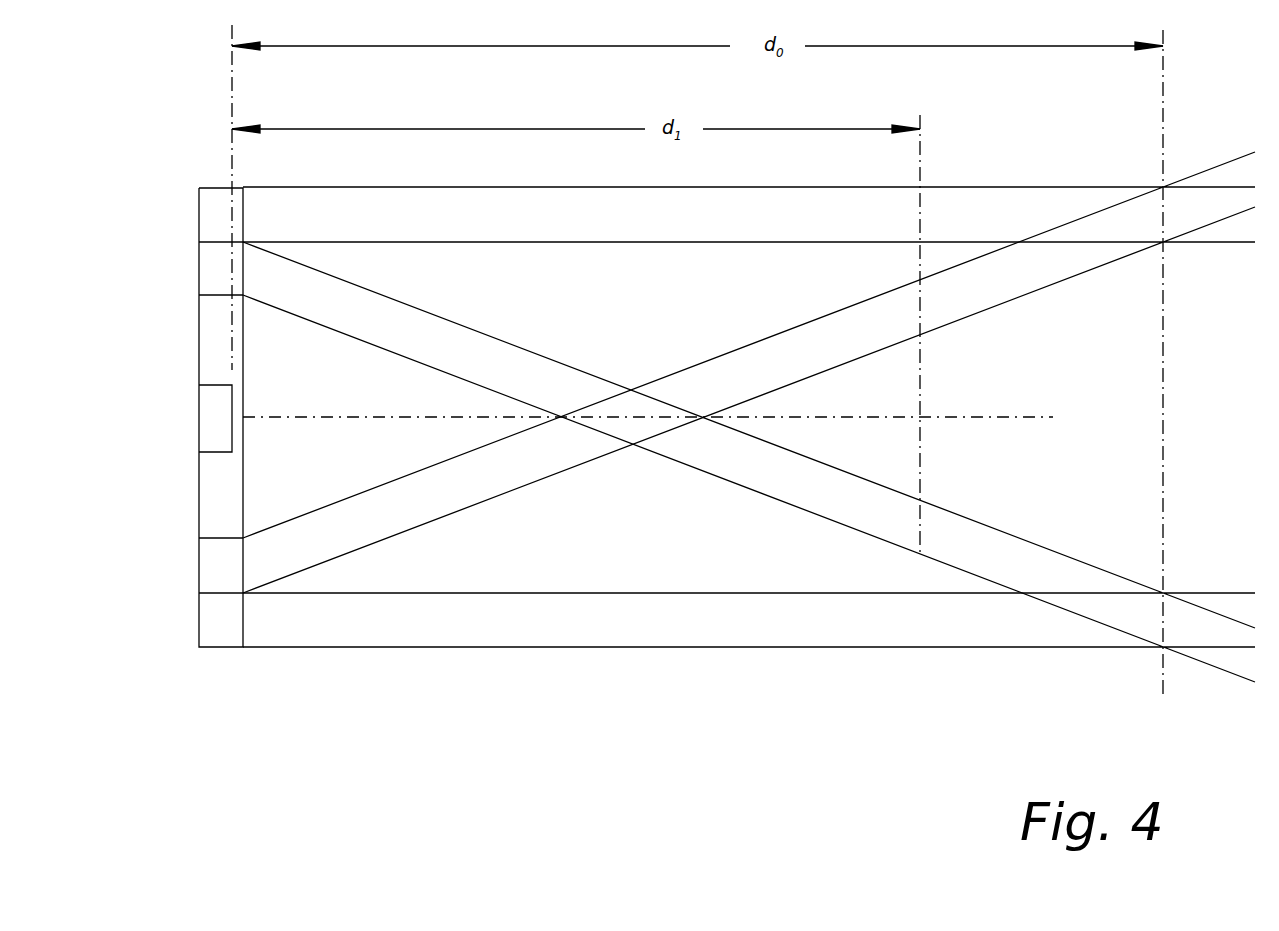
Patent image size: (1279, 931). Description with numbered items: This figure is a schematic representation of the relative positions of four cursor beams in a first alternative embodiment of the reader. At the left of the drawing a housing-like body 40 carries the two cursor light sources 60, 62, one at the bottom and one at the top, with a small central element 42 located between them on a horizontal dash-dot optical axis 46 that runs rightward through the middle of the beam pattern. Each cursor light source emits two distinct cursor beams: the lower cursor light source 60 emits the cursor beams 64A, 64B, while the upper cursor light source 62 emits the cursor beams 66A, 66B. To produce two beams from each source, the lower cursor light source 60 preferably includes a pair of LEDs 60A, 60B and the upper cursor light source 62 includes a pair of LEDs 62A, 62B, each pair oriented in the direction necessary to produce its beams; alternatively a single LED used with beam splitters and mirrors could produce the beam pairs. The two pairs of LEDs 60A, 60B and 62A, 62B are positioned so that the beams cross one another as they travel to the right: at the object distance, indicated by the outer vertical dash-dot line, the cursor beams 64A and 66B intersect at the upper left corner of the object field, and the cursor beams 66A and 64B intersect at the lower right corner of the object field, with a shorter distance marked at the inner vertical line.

The lens body 40 is at (199, 487).
The central aperture 42 is at (207, 409).
The optical axis 46 is at (983, 417).
The cursor light source 60 is at (199, 620).
The LED 60A is at (214, 630).
The LED 60B is at (221, 572).
The cursor light source 62 is at (199, 210).
The LED 62A is at (214, 205).
The LED 62B is at (222, 272).
The cursor beam 64A is at (755, 187).
The cursor beam 64B is at (587, 357).
The cursor beam 66A is at (740, 647).
The cursor beam 66B is at (580, 466).